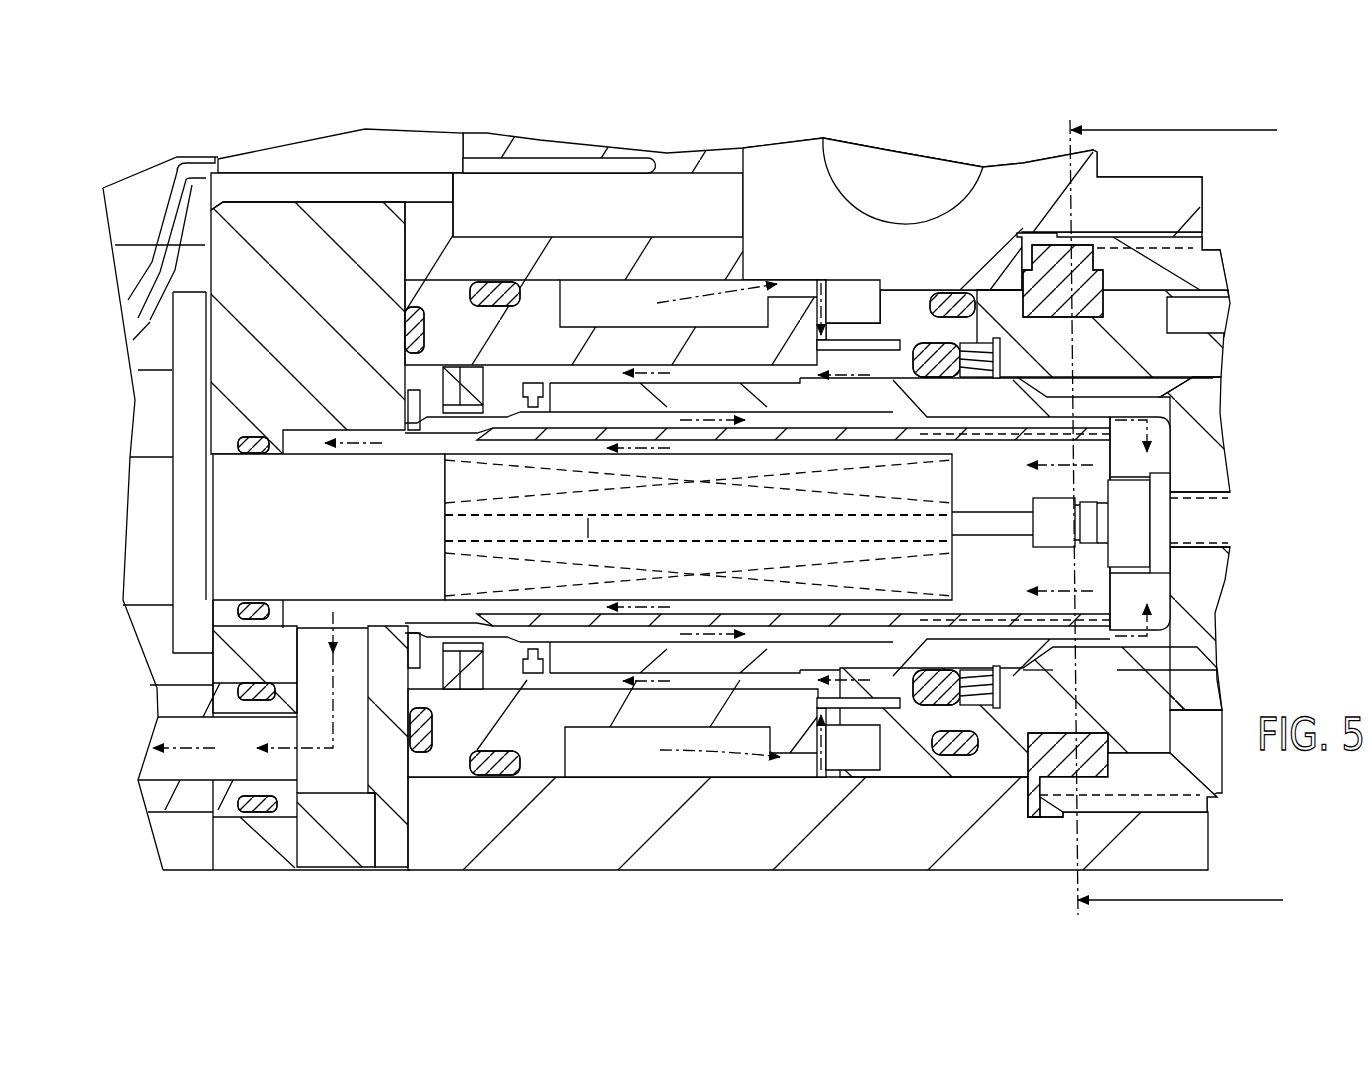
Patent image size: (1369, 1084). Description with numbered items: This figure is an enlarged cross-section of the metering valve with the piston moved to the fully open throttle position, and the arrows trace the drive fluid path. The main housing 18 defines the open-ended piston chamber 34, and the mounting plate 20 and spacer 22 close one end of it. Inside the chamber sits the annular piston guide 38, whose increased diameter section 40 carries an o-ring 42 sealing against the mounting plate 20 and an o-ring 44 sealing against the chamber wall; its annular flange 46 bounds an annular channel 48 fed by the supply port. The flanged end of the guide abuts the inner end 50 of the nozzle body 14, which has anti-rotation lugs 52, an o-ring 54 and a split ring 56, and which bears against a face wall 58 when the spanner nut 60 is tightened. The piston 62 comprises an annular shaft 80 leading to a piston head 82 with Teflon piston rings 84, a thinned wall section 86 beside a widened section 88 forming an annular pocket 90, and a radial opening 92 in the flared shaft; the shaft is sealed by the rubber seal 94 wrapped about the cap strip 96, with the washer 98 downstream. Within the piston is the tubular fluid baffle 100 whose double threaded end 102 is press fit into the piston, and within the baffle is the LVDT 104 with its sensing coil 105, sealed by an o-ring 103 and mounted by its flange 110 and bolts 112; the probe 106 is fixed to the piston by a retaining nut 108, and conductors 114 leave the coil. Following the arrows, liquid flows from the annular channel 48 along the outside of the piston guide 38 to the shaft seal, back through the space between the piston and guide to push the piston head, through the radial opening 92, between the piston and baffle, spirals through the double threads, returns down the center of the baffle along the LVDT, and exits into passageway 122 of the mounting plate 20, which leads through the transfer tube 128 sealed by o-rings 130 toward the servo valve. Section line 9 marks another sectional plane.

The section line 9- 9 is at (1190, 515).
The nozzle body 14 is at (1205, 355).
The main housing 18 is at (768, 150).
The mounting plate 20 is at (310, 337).
The spacer 22 is at (188, 260).
The piston chamber 34 is at (1001, 482).
The piston guide 38 is at (640, 338).
The increased diameter section 40 is at (450, 297).
The o-ring 42 is at (410, 325).
The o-ring 44 is at (490, 296).
The annular flange 46 is at (790, 300).
The annular channel 48 is at (735, 316).
The inner end of the nozzle body 50 is at (1000, 313).
The anti-rotation lugs 52 is at (850, 330).
The o-ring 54 is at (970, 300).
The split ring 56 is at (1097, 317).
The face wall 58 is at (925, 343).
The spanner nut 60 is at (1202, 270).
The piston 62 is at (1215, 425).
The annular shaft 80 is at (593, 662).
The piston head 82 is at (503, 673).
The piston rings 84 is at (462, 689).
The thinned wall section 86 is at (1112, 640).
The widened section 88 is at (1205, 665).
The annular pocket 90 is at (1163, 657).
The radial opening 92 is at (545, 392).
The rubber seal 94 is at (917, 710).
The cap strip 96 is at (957, 665).
The washer 98 is at (988, 705).
The fluid baffle 100 is at (813, 420).
The double threaded end 102 is at (1007, 415).
The o-ring 103 is at (247, 435).
The LVDT 104 is at (342, 547).
The sensing coil 105 is at (462, 486).
The probe 106 is at (990, 523).
The retaining nut 108 is at (1144, 532).
The flange 110 is at (188, 410).
The bolts 112 is at (145, 390).
The conductors 114 is at (182, 190).
The passageway 122 is at (352, 694).
The transfer tube 128 is at (157, 793).
The o-rings 130 is at (250, 814).